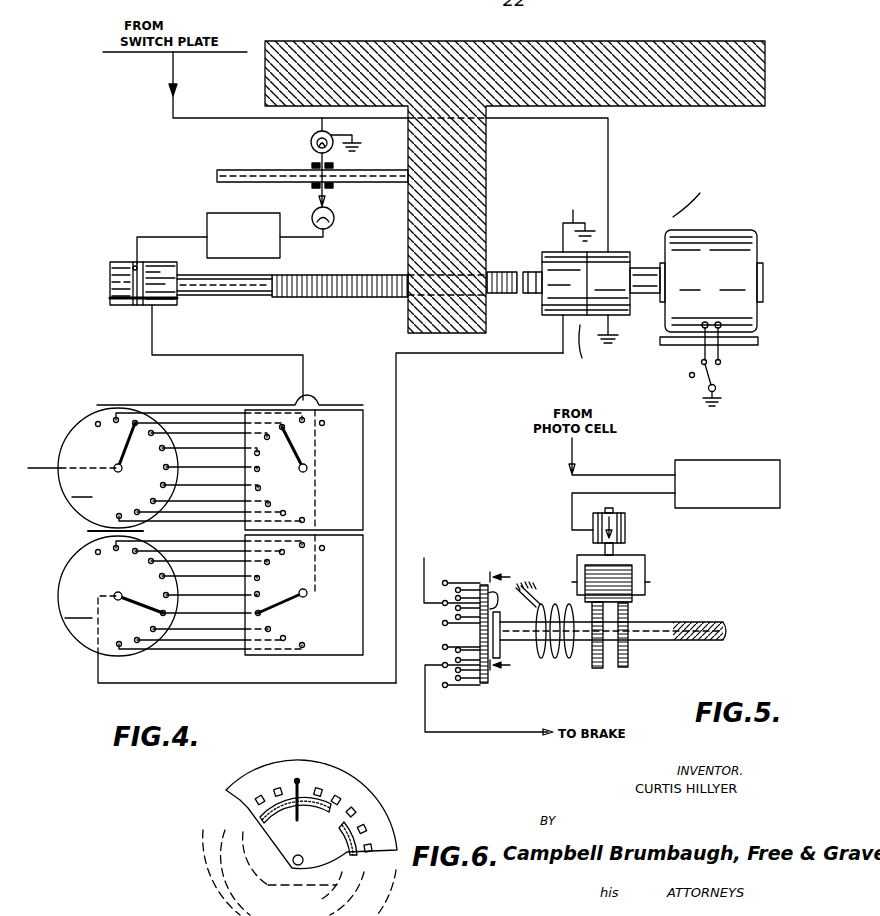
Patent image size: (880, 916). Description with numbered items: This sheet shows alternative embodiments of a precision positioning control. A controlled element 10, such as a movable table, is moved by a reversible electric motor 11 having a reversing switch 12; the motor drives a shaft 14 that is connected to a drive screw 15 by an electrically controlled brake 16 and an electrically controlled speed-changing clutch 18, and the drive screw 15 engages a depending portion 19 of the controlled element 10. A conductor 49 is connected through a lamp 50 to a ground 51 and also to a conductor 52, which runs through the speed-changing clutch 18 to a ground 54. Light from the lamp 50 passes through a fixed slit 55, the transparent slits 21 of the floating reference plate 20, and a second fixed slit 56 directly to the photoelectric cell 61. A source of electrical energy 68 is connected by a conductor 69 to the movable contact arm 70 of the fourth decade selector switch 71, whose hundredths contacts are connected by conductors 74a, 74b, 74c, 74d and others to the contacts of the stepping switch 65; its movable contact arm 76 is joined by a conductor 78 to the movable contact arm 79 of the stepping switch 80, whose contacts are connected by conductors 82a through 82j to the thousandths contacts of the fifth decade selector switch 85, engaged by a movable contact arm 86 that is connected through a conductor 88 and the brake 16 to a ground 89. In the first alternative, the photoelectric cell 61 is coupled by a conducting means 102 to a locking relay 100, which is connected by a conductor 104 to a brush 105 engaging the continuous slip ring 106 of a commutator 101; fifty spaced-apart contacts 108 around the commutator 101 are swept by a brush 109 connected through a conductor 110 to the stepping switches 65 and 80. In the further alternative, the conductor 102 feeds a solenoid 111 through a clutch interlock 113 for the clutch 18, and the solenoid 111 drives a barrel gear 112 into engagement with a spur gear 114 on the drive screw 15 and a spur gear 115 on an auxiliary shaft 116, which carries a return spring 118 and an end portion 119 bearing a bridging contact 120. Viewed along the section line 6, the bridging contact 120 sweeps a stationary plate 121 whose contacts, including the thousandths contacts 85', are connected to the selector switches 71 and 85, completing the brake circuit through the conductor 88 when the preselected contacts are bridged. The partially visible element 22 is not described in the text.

In FIG. 4, the controlled element 10 is at (665, 92).
In FIG. 4, the reversible electric motor 11 is at (713, 232).
In FIG. 4, the reversing switch 12 is at (713, 373).
In FIG. 4, the shaft 14 is at (645, 270).
In FIG. 4, the drive screw 15 is at (503, 272).
In FIG. 5, the drive screw 15 is at (697, 617).
In FIG. 4, the electrically controlled brake 16 is at (553, 297).
In FIG. 4, the speed-changing clutch 18 is at (628, 252).
In FIG. 4, the depending portion 19 is at (481, 207).
In FIG. 4, the floating reference plate 20 is at (233, 170).
In FIG. 4, the transparent slits 21 is at (318, 182).
In FIG. 4, the carriage 22 is at (508, 25).
In FIG. 4, the conductor 49 is at (168, 111).
In FIG. 4, the lamp 50 is at (311, 142).
In FIG. 4, the ground or reference point 51 is at (359, 143).
In FIG. 4, the conductor 52 is at (608, 140).
In FIG. 4, the ground or reference point 54 is at (615, 328).
In FIG. 4, the fixed slit 55 is at (334, 162).
In FIG. 4, the second fixed slit 56 is at (334, 187).
In FIG. 4, the photoelectric cell 61 is at (335, 220).
In FIG. 4, the stepping switch 65 is at (340, 418).
In FIG. 4, the source of electrical energy 68 is at (35, 478).
In FIG. 4, the conductor 69 is at (52, 465).
In FIG. 5, the conductor 69 is at (424, 587).
In FIG. 4, the movable contact arm 70 is at (124, 456).
In FIG. 5, the movable contact arm 70 is at (442, 607).
In FIG. 4, the fourth decade selector switch 71 is at (70, 500).
In FIG. 5, the fourth decade selector switch 71 is at (457, 576).
In FIG. 6, the fourth decade selector switch 71 is at (343, 837).
In FIG. 4, the conductor 74a is at (187, 410).
In FIG. 4, the conductor 74b is at (223, 410).
In FIG. 4, the conductor 74c is at (173, 420).
In FIG. 4, the conductor 74d is at (228, 527).
In FIG. 4, the movable contact arm 76 is at (298, 448).
In FIG. 4, the conductor 78 is at (318, 485).
In FIG. 4, the movable contact arm 79 is at (290, 608).
In FIG. 4, the stepping switch 80 is at (328, 643).
In FIG. 4, the conductor 82a is at (190, 613).
In FIG. 4, the conductor 82j is at (217, 653).
In FIG. 4, the fifth decade selector switch 85 is at (223, 639).
In FIG. 5, the fifth decade selector switch 85 is at (453, 706).
In FIG. 6, the contact 85' is at (308, 794).
In FIG. 4, the movable contact arm 86 is at (140, 593).
In FIG. 5, the movable contact arm 86 is at (443, 662).
In FIG. 4, the conductor 88 is at (397, 477).
In FIG. 5, the conductor 88 is at (463, 738).
In FIG. 4, the ground or reference point 89 is at (573, 222).
In FIG. 4, the locking relay 100 is at (230, 212).
In FIG. 4, the commutator 101 is at (118, 262).
In FIG. 4, the conducting means 102 is at (305, 237).
In FIG. 5, the conducting means 102 is at (577, 453).
In FIG. 4, the conductor 104 is at (165, 236).
In FIG. 4, the brush 105 is at (133, 269).
In FIG. 4, the continuous slip ring 106 is at (122, 305).
In FIG. 4, the spaced-apart contacts 108 is at (150, 306).
In FIG. 4, the brush 109 is at (167, 307).
In FIG. 4, the conductor 110 is at (240, 355).
In FIG. 5, the solenoid 111 is at (625, 527).
In FIG. 5, the barrel gear 112 is at (643, 593).
In FIG. 5, the clutch interlock 113 is at (767, 507).
In FIG. 5, the spur gear 114 is at (630, 608).
In FIG. 5, the spur gear 115 is at (596, 668).
In FIG. 5, the auxiliary shaft 116 is at (582, 655).
In FIG. 5, the return spring 118 is at (553, 583).
In FIG. 5, the end portion 119 is at (499, 645).
In FIG. 5, the bridging contact 120 is at (497, 607).
In FIG. 6, the bridging contact 120 is at (313, 788).
In FIG. 5, the stationary plate 121 is at (485, 583).
In FIG. 6, the stationary plate 121 is at (372, 793).
In FIG. 5, the section line 6 is at (504, 624).